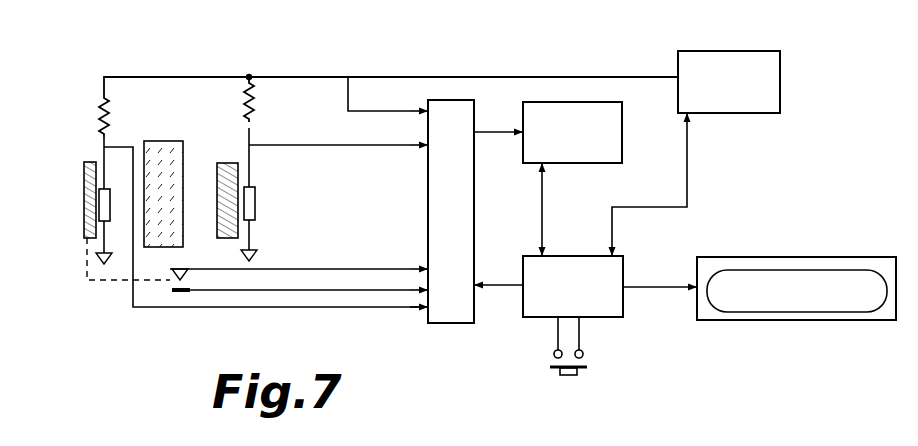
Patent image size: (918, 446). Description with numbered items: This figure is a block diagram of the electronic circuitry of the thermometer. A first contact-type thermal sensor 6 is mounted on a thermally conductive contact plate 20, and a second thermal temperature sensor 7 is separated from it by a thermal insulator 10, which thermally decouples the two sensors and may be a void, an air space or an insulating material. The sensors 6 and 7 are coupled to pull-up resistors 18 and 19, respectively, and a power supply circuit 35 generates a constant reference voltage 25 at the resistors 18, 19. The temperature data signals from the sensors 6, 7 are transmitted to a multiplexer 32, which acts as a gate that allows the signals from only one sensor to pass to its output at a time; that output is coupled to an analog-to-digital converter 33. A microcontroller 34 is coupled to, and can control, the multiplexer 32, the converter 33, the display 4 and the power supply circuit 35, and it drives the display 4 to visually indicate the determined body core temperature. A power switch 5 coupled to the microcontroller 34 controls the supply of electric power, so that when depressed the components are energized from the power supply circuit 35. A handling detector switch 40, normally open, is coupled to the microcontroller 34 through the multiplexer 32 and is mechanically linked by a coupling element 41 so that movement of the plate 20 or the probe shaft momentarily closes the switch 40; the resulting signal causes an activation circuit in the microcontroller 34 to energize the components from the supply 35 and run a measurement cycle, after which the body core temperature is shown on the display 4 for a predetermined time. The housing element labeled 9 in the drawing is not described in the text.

The display 4 is at (747, 265).
The power switch 5 is at (588, 360).
The first contact-type thermal sensor 6 is at (83, 170).
The second thermal temperature sensor 7 is at (257, 199).
The probe housing 9 is at (226, 162).
The thermal insulator 10 is at (161, 150).
The pull-up resistor 18 is at (117, 102).
The pull-up resistor 19 is at (263, 112).
The thermally conductive contact plate 20 is at (90, 222).
The constant reference voltage 25 is at (392, 110).
The multiplexer 32 is at (452, 300).
The analog-to-digital converter 33 is at (537, 113).
The microcontroller 34 is at (558, 263).
The power supply circuit 35 is at (748, 98).
The handling detector switch 40 is at (172, 293).
The coupling element 41 is at (85, 276).